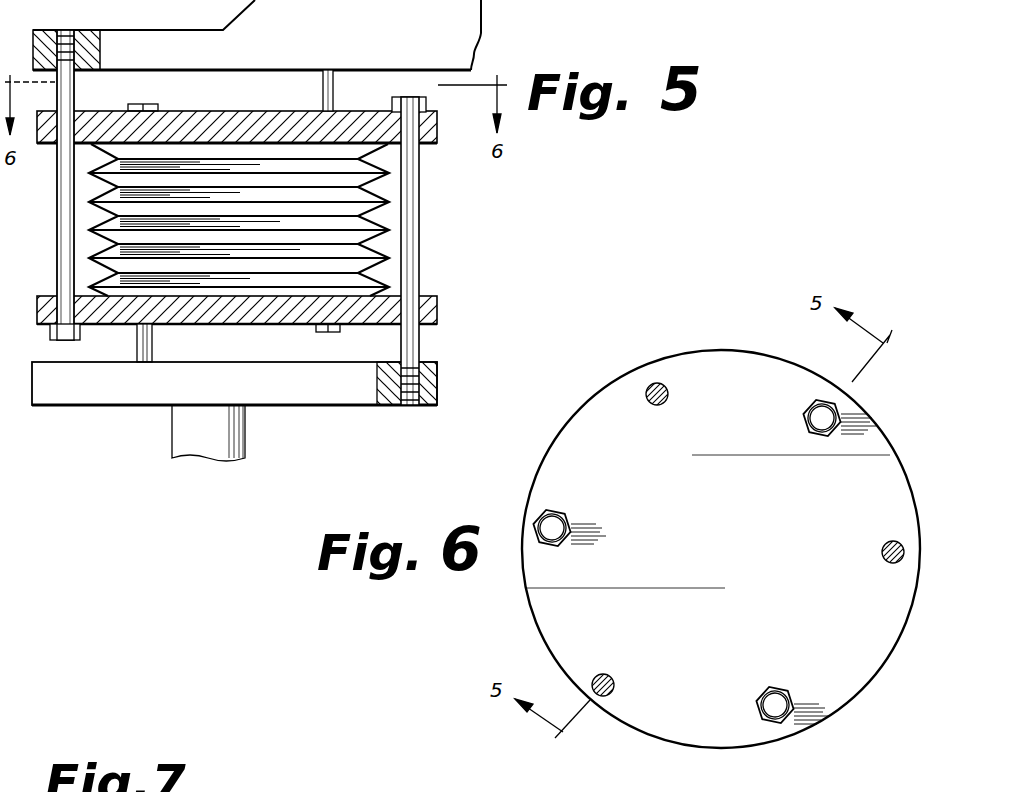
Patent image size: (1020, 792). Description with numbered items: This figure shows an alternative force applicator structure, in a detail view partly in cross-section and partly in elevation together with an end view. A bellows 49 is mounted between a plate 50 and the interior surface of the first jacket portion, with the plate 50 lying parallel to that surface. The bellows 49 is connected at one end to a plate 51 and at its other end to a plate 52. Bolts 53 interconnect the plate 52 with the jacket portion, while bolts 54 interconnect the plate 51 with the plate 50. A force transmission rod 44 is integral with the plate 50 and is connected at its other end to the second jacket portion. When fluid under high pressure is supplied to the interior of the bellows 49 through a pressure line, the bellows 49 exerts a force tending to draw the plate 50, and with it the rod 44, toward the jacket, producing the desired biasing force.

In FIG. 5, the force transmission rod 44 is at (245, 440).
In FIG. 5, the bellows 49 is at (392, 231).
In FIG. 5, the plate 50 is at (160, 402).
In FIG. 5, the plate 51 is at (378, 101).
In FIG. 6, the plate 51 is at (738, 352).
In FIG. 5, the plate 52 is at (272, 326).
In FIG. 5, the bolt 53 is at (323, 92).
In FIG. 6, the bolt 53 is at (655, 405).
In FIG. 5, the bolt 54 is at (412, 268).
In FIG. 6, the bolt 54 is at (822, 423).